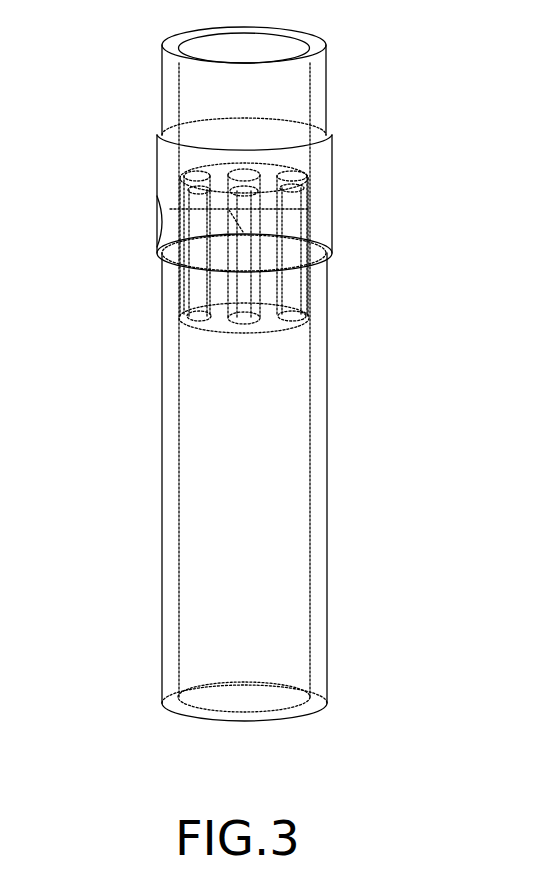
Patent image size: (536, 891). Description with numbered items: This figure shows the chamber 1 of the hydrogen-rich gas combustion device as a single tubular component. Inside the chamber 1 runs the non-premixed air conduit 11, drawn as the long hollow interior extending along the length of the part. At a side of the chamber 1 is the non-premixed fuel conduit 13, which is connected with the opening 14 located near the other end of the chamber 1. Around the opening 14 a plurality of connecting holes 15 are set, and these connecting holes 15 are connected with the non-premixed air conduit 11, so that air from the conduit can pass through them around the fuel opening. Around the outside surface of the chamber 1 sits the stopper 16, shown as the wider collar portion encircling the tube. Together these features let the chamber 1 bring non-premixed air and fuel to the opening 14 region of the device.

The chamber 1 is at (232, 374).
The non-premixed air conduit 11 is at (307, 515).
The non-premixed fuel conduit 13 is at (170, 208).
The opening 14 is at (253, 178).
The connecting holes 15 is at (303, 292).
The stopper 16 is at (332, 208).